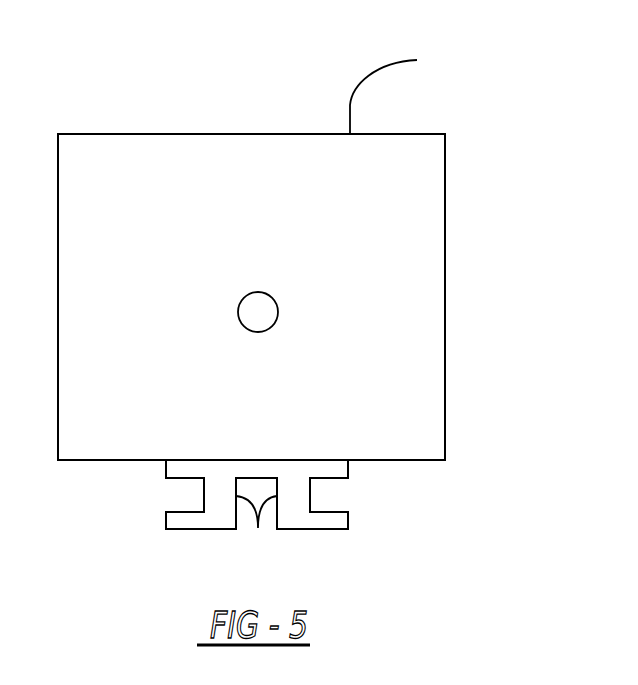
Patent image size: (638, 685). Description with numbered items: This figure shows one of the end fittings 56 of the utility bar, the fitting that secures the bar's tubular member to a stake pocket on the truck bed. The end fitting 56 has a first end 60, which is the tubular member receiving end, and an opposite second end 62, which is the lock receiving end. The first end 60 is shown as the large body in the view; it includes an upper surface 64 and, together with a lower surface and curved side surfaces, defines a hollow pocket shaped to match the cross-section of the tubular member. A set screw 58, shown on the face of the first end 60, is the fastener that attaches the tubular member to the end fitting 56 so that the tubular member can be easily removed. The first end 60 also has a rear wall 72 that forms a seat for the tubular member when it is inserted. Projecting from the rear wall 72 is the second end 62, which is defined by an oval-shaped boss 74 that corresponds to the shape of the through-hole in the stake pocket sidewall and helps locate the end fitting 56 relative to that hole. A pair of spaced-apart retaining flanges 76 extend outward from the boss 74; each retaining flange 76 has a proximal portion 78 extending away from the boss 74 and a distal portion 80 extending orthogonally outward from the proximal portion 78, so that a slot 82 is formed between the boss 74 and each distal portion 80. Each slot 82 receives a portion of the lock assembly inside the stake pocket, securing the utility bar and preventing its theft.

The end fitting 56 is at (502, 240).
The set screw 58 is at (262, 313).
The first end 60 is at (398, 91).
The second end 62 is at (228, 527).
The upper surface 64 is at (392, 203).
The rear wall 72 is at (434, 462).
The boss 74 is at (166, 470).
The retaining flange 76 is at (225, 530).
The proximal portion 78 is at (258, 528).
The distal portion 80 is at (166, 521).
The slot 82 is at (204, 498).